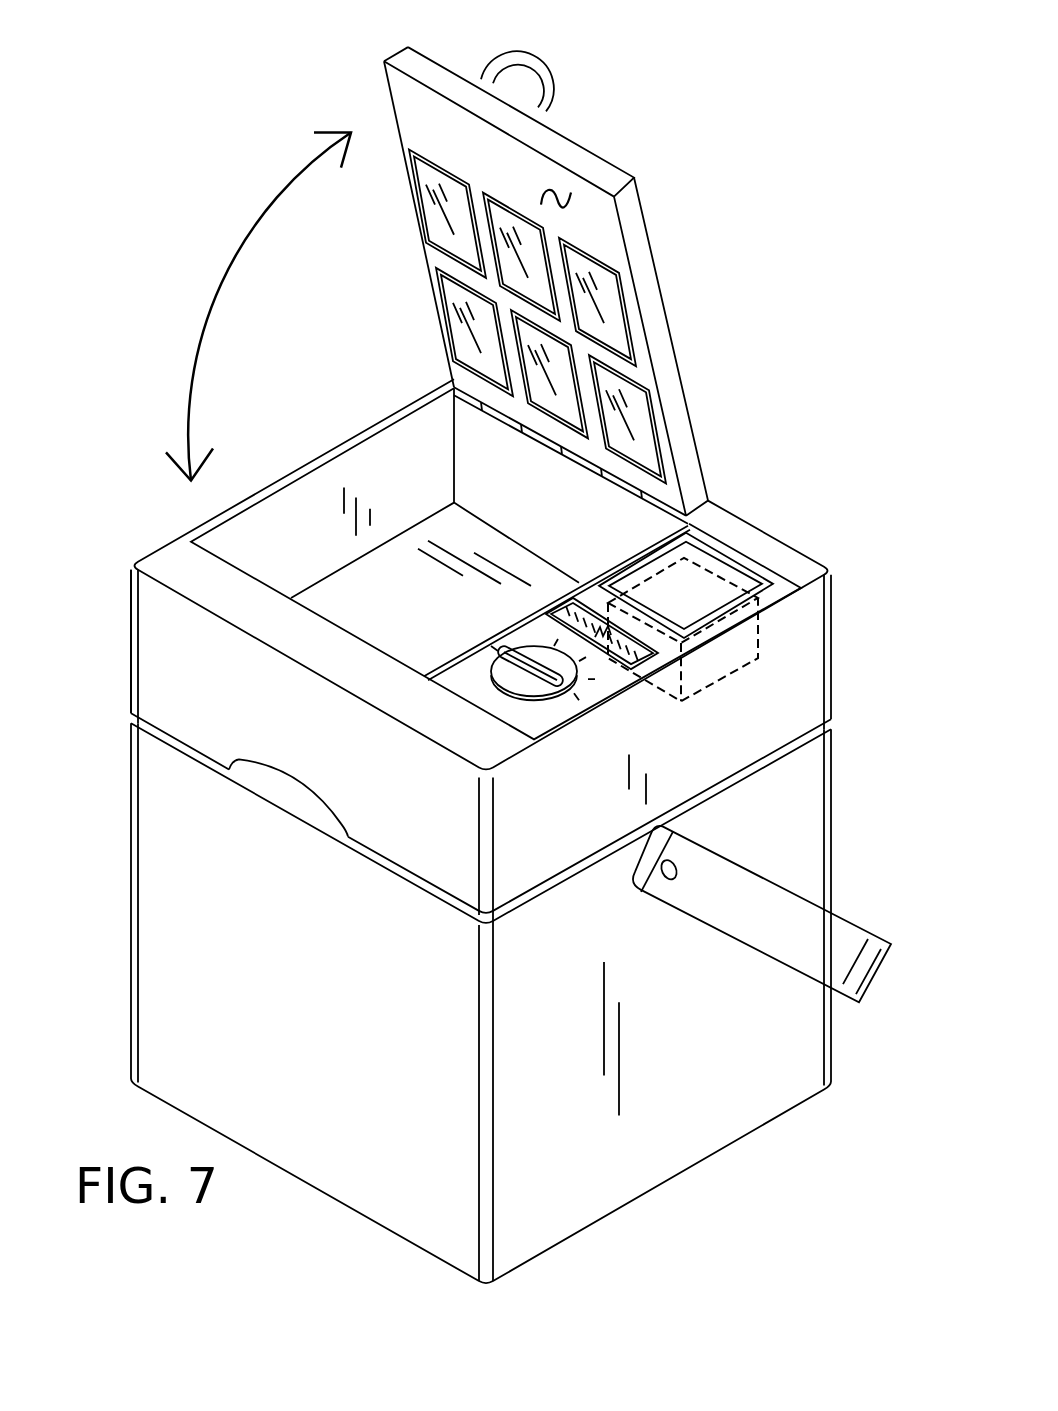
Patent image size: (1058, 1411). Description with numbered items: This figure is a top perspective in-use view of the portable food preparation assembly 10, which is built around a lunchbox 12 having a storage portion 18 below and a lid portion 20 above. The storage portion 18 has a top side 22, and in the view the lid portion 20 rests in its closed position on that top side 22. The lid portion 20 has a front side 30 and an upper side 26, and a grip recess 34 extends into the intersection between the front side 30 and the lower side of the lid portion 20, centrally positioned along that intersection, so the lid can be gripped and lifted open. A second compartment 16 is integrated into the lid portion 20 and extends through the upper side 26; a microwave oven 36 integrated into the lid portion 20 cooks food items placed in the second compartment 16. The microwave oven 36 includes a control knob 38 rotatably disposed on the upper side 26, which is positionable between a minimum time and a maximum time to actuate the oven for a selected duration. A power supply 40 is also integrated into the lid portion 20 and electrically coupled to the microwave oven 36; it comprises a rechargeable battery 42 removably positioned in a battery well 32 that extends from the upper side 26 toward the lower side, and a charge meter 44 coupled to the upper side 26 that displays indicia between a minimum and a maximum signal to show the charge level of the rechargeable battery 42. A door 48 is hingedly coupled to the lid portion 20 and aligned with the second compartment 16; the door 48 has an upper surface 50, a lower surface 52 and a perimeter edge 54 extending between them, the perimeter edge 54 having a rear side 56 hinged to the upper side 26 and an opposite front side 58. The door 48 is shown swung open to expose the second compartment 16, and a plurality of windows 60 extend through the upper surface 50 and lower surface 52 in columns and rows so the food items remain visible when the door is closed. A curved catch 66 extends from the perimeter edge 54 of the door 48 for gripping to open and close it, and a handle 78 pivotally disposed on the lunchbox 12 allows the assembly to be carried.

The portable food preparation assembly 10 is at (848, 242).
The lunchbox 12 is at (851, 714).
The second compartment 16 is at (387, 503).
The storage portion 18 is at (836, 841).
The lid portion 20 is at (833, 603).
The top side 22 is at (154, 733).
The upper side 26 is at (242, 598).
The front side 30 is at (228, 702).
The battery well 32 is at (735, 668).
The grip recess 34 is at (286, 795).
The microwave oven 36 is at (590, 593).
The control knob 38 is at (520, 655).
The power supply 40 is at (690, 571).
The rechargeable battery 42 is at (758, 634).
The charge meter 44 is at (617, 640).
The door 48 is at (384, 86).
The upper surface 50 is at (638, 193).
The lower surface 52 is at (553, 186).
The perimeter edge 54 is at (438, 72).
The rear side 56 is at (468, 398).
The front side 58 is at (405, 46).
The windows 60 is at (524, 255).
The catch 66 is at (531, 82).
The handle 78 is at (882, 955).